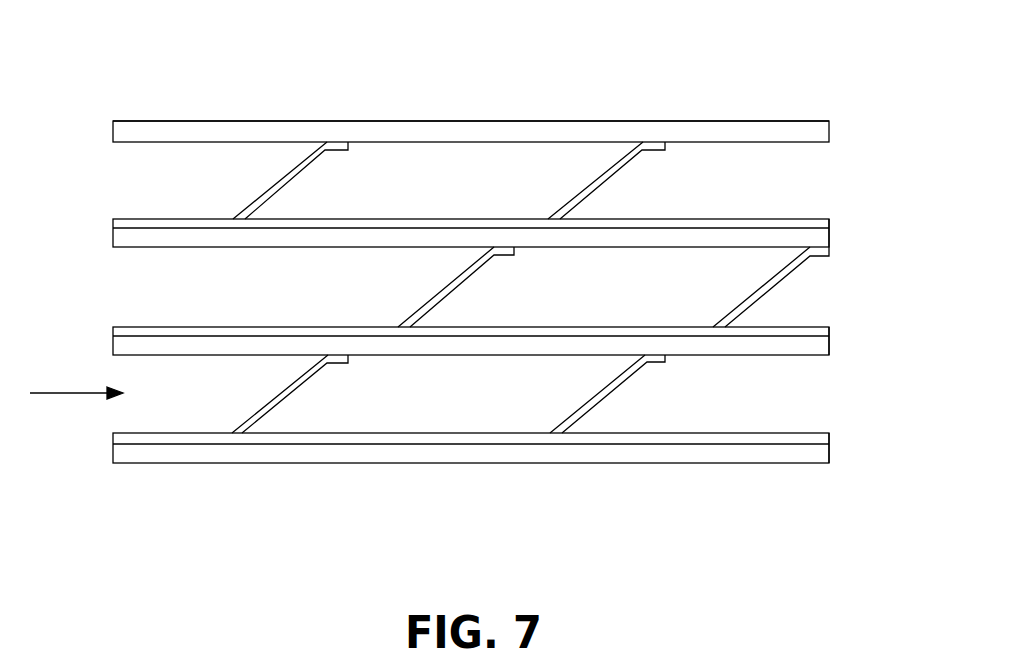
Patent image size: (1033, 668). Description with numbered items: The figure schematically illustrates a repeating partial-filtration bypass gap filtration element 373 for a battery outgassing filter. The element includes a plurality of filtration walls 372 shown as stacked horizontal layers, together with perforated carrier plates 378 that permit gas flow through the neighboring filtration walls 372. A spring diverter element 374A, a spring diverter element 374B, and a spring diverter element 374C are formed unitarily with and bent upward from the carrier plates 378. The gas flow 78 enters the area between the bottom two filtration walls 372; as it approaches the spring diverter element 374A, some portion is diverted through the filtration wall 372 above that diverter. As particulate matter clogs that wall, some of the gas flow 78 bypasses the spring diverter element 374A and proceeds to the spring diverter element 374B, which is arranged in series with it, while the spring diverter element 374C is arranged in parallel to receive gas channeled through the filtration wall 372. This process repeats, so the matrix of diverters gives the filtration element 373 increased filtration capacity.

The gas flow 78 is at (63, 392).
The filtration wall 372 is at (262, 131).
The repeating partial-filtration bypass gap filtration element 373 is at (590, 121).
The spring diverter element 374A is at (292, 390).
The spring diverter element 374B is at (598, 398).
The spring diverter element 374C is at (453, 277).
The carrier plate 378 is at (829, 223).